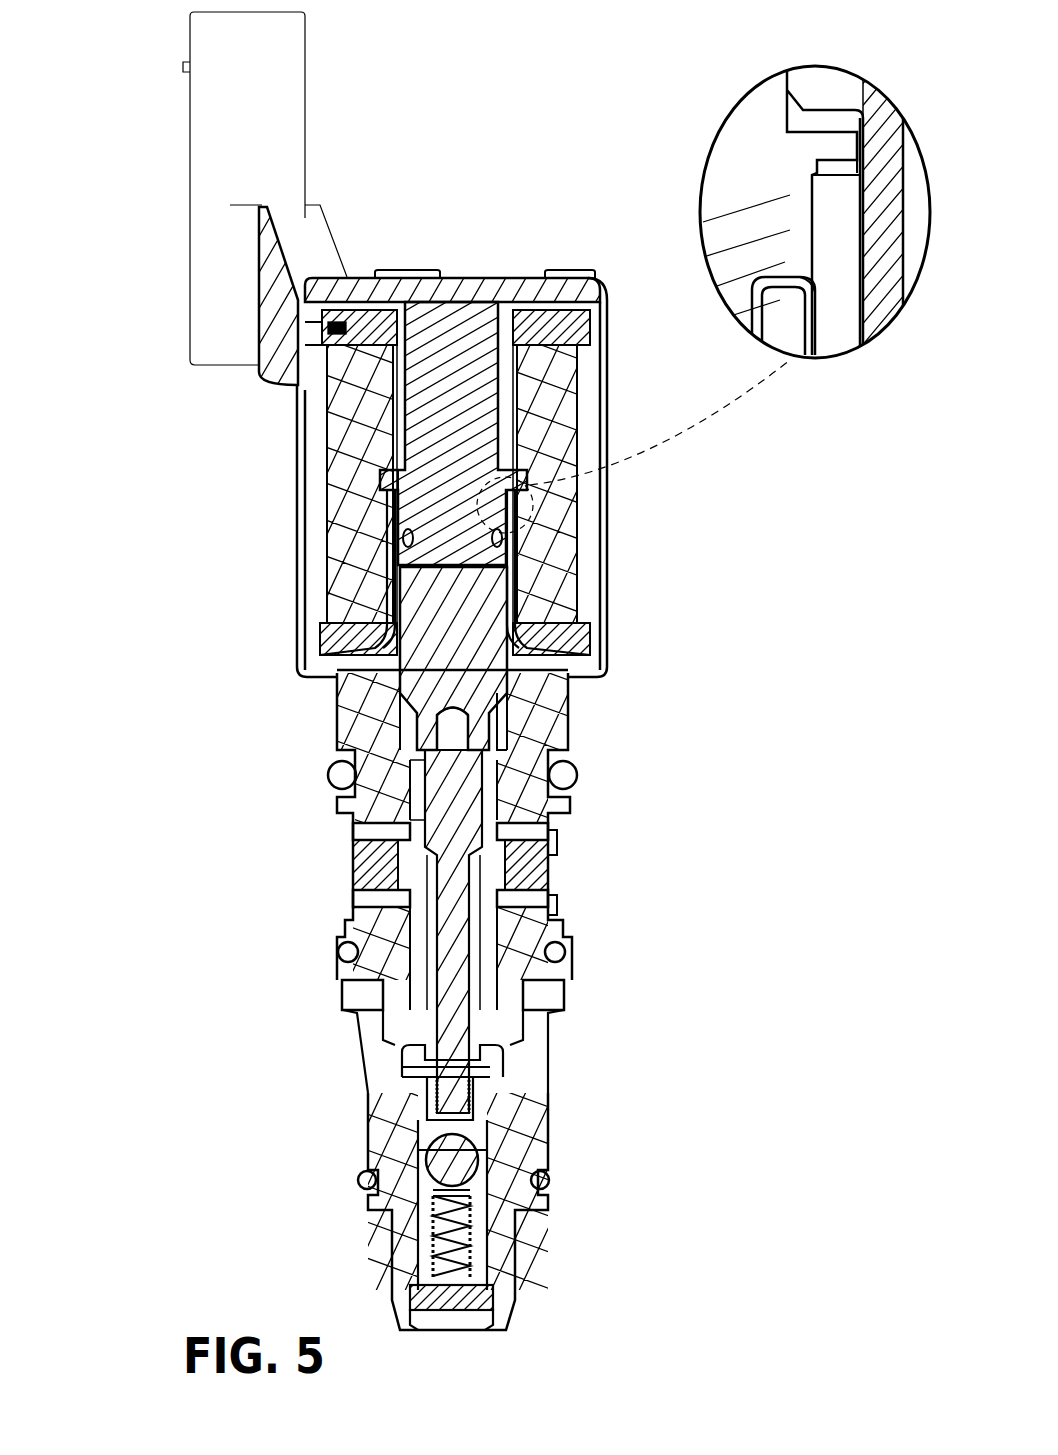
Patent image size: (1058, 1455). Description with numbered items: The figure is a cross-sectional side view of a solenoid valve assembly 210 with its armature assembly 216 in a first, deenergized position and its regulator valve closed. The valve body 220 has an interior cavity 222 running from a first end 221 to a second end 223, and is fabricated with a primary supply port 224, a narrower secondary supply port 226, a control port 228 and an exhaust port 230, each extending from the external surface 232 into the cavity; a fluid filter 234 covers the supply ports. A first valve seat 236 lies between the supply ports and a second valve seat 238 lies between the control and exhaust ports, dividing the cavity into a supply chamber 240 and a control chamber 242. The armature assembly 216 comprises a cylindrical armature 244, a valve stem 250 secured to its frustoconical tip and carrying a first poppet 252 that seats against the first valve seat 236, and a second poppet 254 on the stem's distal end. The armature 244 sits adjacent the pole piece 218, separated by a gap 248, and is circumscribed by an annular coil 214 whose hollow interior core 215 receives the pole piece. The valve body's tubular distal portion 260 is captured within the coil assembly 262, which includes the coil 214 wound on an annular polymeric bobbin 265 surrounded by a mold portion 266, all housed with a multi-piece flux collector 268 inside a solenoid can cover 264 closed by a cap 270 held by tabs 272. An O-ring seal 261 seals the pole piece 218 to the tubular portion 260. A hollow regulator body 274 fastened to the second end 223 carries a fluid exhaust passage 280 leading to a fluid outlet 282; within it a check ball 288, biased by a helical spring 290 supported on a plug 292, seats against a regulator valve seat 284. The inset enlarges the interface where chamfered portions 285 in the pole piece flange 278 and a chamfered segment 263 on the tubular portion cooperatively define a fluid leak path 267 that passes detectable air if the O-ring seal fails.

The valve assembly 210 is at (176, 210).
The annular coil 214 is at (382, 470).
The hollow interior core 215 is at (326, 406).
The armature assembly 216 is at (476, 903).
The pole piece 218 is at (432, 428).
The valve body 220 is at (572, 700).
The first end 221 is at (400, 492).
The interior cavity 222 is at (495, 740).
The second end 223 is at (512, 1080).
The primary supply port 224 is at (356, 826).
The secondary supply port 226 is at (375, 890).
The control port 228 is at (350, 990).
The exhaust port 230 is at (495, 1100).
The external surface 232 is at (345, 955).
The fluid filter 234 is at (352, 860).
The first valve seat 236 is at (560, 810).
The second valve seat 238 is at (362, 1120).
The supply chamber 240 is at (425, 752).
The control chamber 242 is at (370, 1025).
The armature 244 is at (415, 693).
The gap 248 is at (372, 590).
The valve stem 250 is at (435, 940).
The first poppet 252 is at (415, 800).
The second poppet 254 is at (500, 1040).
The tubular distal portion 260 is at (528, 568).
The O-ring seal 261 is at (404, 538).
The coil assembly 262 is at (606, 612).
The chamfered segment 263 is at (835, 178).
The solenoid can cover 264 is at (606, 282).
The annular polymeric bobbin 265 is at (592, 322).
The mold portion 266 is at (598, 425).
The fluid leak path 267 is at (912, 240).
The flux collector 268 is at (356, 650).
The cap 270 is at (465, 278).
The tabs 272 is at (385, 270).
The regulator body 274 is at (380, 1060).
The pole piece flange 278 is at (840, 168).
The fluid exhaust passage 280 is at (430, 1242).
The fluid outlet 282 is at (472, 1332).
The regulator valve seat 284 is at (445, 1152).
The chamfered portions 285 is at (800, 278).
The check ball 288 is at (436, 1176).
The helical spring 290 is at (440, 1205).
The plug 292 is at (430, 1300).